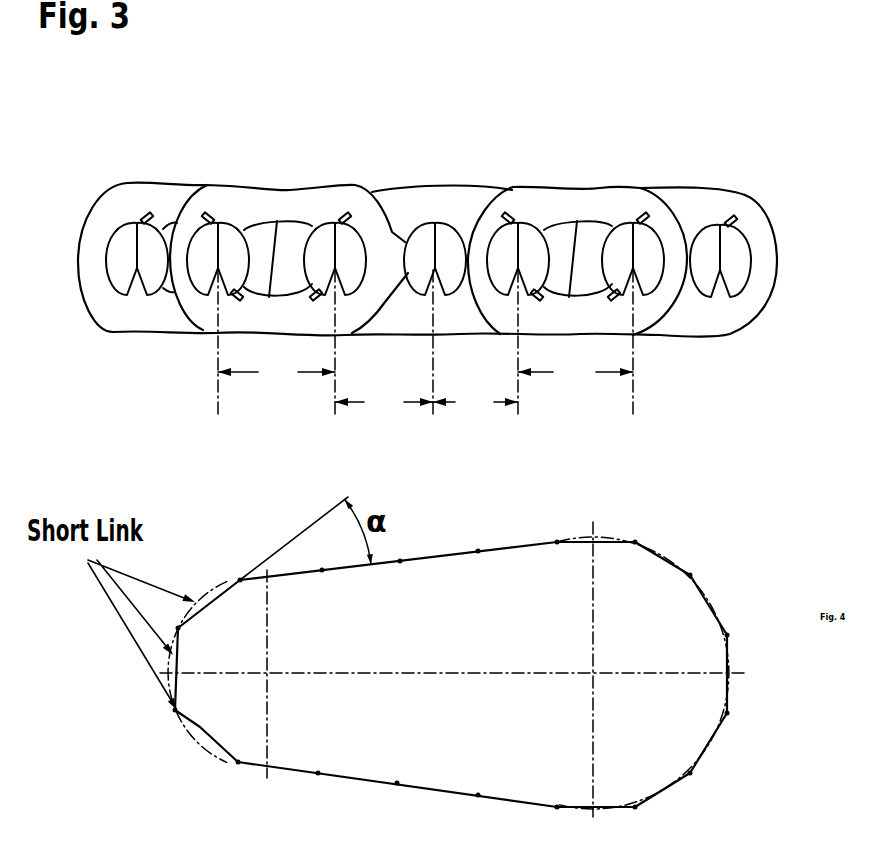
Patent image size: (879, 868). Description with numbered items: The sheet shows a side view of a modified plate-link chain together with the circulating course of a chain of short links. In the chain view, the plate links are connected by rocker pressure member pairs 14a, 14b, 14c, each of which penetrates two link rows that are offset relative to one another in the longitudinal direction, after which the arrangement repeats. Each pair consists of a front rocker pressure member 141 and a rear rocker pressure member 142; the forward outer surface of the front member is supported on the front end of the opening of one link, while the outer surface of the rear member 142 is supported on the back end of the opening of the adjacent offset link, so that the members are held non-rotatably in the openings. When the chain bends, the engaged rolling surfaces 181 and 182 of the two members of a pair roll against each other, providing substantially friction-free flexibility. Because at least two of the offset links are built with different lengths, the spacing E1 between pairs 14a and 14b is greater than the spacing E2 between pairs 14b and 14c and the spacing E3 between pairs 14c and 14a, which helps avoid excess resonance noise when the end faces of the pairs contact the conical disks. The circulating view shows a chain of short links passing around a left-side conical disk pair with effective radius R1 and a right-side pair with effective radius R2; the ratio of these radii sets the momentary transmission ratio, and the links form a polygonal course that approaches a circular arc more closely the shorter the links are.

In FIG. 3, the front rocker pressure member 141 is at (120, 238).
In FIG. 3, the rear rocker pressure member 142 is at (142, 233).
In FIG. 3, the rocker pressure member pair 14a is at (223, 206).
In FIG. 3, the rocker pressure member pair 14b is at (340, 206).
In FIG. 3, the rocker pressure member pair 14c is at (438, 206).
In FIG. 3, the rolling surface 181 is at (733, 292).
In FIG. 3, the rolling surface 182 is at (733, 292).
In FIG. 3, the spacing E1 is at (425, 373).
In FIG. 3, the spacing E2 is at (384, 403).
In FIG. 3, the spacing E3 is at (475, 403).
In FIG. 4, the effective radius R1 is at (198, 753).
In FIG. 4, the effective radius R2 is at (676, 802).